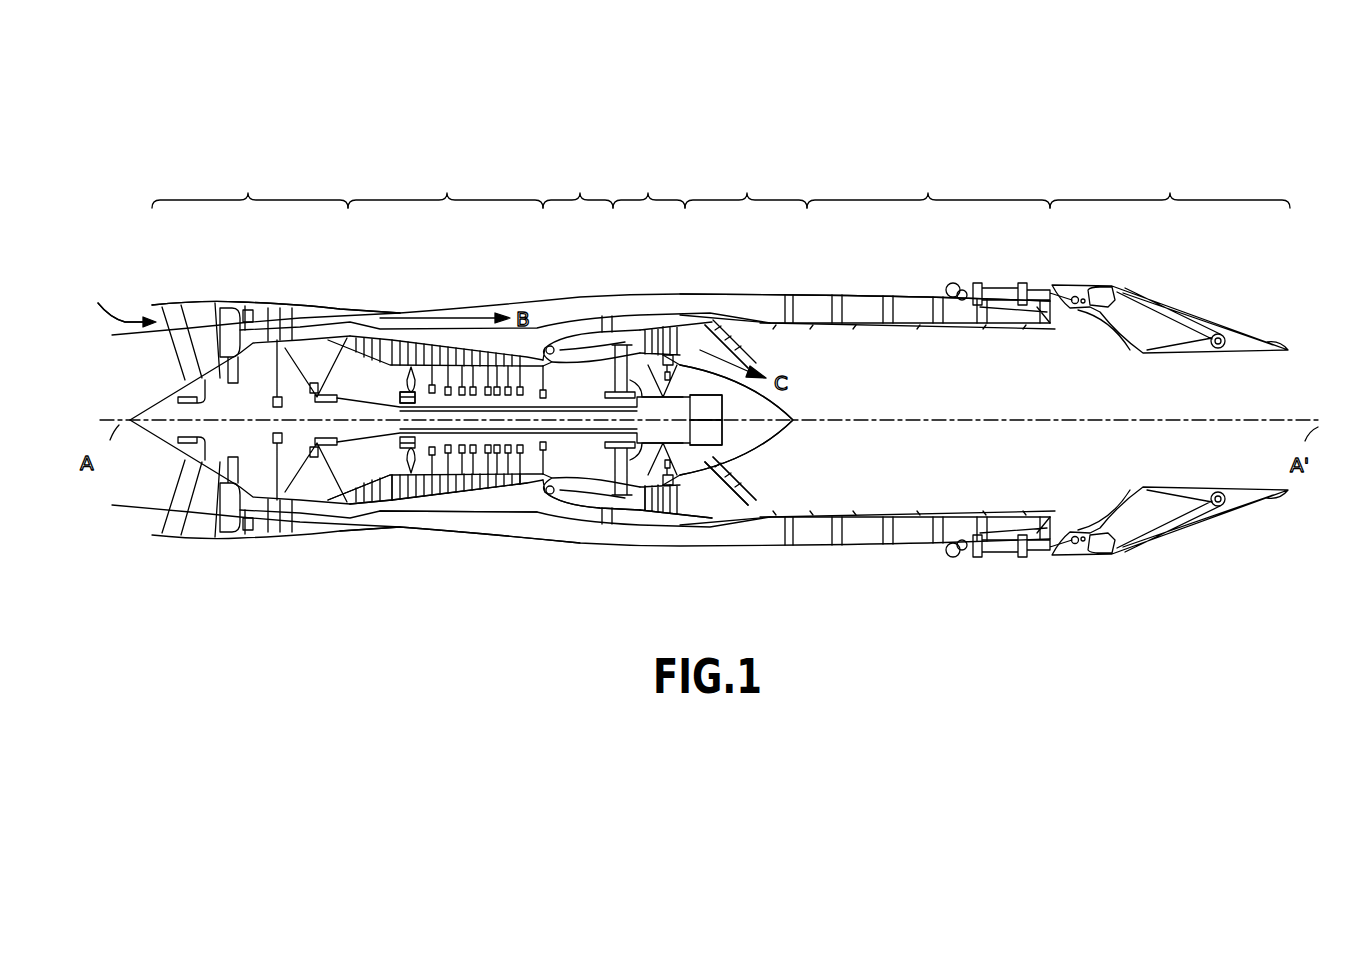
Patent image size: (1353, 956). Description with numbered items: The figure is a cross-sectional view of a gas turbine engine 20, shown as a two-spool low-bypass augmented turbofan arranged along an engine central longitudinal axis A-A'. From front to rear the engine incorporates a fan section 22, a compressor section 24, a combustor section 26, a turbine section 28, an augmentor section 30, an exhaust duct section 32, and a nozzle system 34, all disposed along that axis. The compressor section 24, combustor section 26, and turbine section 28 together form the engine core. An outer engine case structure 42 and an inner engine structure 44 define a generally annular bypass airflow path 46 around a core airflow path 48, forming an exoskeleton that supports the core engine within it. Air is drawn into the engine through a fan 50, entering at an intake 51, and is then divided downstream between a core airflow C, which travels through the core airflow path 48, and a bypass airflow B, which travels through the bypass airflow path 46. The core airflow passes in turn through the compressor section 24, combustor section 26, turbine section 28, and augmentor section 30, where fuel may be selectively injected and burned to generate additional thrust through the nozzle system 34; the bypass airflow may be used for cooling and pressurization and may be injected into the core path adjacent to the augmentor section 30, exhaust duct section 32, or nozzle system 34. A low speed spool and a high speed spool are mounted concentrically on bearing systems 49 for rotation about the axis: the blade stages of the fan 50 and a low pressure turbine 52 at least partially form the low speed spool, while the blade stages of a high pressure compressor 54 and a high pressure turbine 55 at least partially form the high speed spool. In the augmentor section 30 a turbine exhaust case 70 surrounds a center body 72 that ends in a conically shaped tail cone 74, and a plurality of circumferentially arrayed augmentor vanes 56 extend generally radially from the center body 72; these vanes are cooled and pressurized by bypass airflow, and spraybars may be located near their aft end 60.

The gas turbine engine 20 is at (805, 109).
The fan section 22 is at (250, 182).
The compressor section 24 is at (445, 182).
The combustor section 26 is at (578, 182).
The turbine section 28 is at (649, 182).
The augmentor section 30 is at (746, 182).
The exhaust duct section 32 is at (928, 182).
The nozzle system 34 is at (1170, 182).
The outer engine case structure 42 is at (372, 528).
The inner engine structure 44 is at (470, 510).
The bypass airflow path 46 is at (435, 518).
The core airflow path 48 is at (347, 510).
The bearing systems 49 is at (397, 395).
The fan 50 is at (238, 286).
The intake 51 is at (114, 300).
The low pressure turbine 52 is at (657, 513).
The high pressure compressor 54 is at (503, 487).
The high pressure turbine 55 is at (618, 515).
The augmentor vanes 56 is at (710, 330).
The aft end 60 is at (745, 490).
The turbine exhaust case 70 is at (739, 278).
The center body 72 is at (745, 443).
The tail cone 74 is at (796, 409).